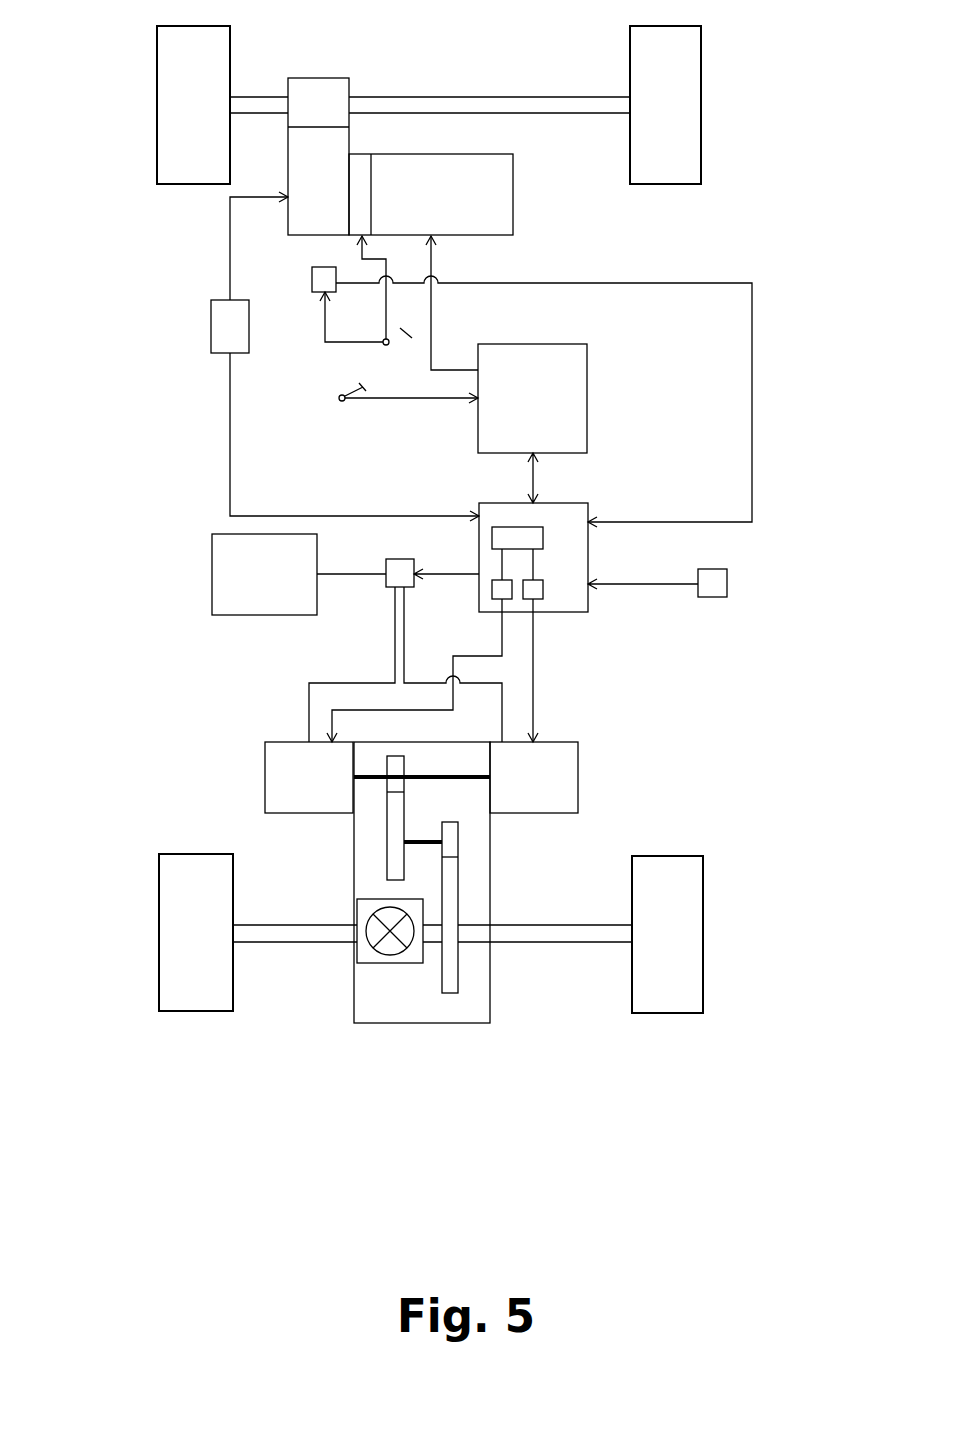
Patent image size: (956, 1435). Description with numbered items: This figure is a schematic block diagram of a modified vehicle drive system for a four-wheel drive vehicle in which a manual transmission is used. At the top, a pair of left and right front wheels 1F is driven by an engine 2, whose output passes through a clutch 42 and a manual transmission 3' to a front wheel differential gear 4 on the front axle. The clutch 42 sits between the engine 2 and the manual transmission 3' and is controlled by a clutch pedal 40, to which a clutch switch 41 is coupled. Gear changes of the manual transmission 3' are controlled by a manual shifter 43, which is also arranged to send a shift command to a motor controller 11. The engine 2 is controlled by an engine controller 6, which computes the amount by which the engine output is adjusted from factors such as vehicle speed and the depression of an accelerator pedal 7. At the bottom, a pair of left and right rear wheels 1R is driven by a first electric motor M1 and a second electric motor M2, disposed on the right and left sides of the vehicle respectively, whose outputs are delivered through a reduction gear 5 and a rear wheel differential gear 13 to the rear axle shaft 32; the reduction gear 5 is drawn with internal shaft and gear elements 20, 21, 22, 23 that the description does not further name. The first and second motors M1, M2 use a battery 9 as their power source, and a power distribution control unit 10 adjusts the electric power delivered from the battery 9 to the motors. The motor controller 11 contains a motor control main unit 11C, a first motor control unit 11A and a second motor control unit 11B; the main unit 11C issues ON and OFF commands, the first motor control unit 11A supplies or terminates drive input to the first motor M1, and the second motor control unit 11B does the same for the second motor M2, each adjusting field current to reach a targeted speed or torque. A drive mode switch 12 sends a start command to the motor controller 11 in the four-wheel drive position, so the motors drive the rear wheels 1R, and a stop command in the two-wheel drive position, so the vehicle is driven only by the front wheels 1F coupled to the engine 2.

The front wheels 1F is at (157, 97).
The rear wheels 1R is at (159, 928).
The engine 2 is at (513, 203).
The manual transmission 3' is at (348, 129).
The front wheel differential gear 4 is at (325, 78).
The reduction gear 5 is at (490, 1003).
The engine controller 6 is at (587, 395).
The accelerator pedal 7 is at (356, 390).
The battery 9 is at (212, 578).
The power distribution control unit 10 is at (387, 561).
The motor controller 11 is at (540, 543).
The first motor control unit 11A is at (543, 588).
The second motor control unit 11B is at (492, 590).
The motor control main unit 11C is at (497, 527).
The drive mode switch 12 is at (727, 583).
The rear wheel differential gear 13 is at (372, 963).
The shaft 20 is at (430, 777).
The gear set 21 is at (387, 822).
The intermediate shaft 22 is at (433, 840).
The gears 23 is at (458, 847).
The rear axle shaft 32 is at (605, 925).
The clutch pedal 40 is at (406, 336).
The clutch switch 41 is at (312, 275).
The clutch 42 is at (360, 179).
The manual shifter 43 is at (211, 333).
The first electric motor M1 is at (578, 790).
The second electric motor M2 is at (265, 762).